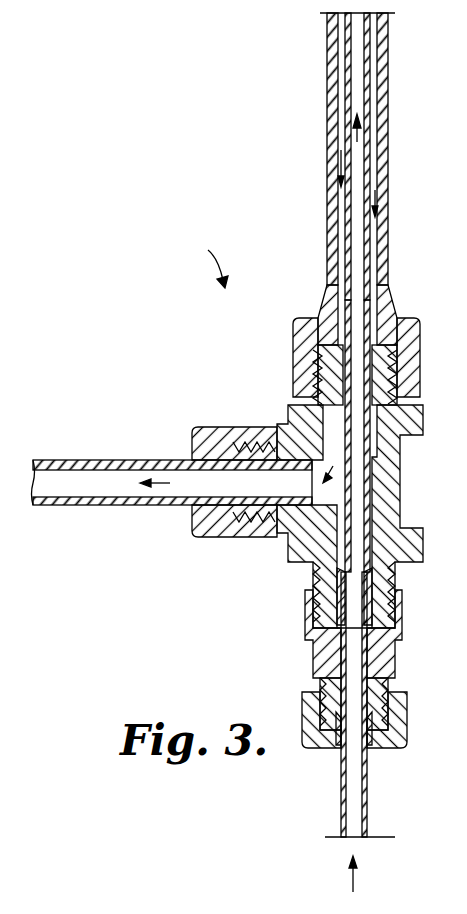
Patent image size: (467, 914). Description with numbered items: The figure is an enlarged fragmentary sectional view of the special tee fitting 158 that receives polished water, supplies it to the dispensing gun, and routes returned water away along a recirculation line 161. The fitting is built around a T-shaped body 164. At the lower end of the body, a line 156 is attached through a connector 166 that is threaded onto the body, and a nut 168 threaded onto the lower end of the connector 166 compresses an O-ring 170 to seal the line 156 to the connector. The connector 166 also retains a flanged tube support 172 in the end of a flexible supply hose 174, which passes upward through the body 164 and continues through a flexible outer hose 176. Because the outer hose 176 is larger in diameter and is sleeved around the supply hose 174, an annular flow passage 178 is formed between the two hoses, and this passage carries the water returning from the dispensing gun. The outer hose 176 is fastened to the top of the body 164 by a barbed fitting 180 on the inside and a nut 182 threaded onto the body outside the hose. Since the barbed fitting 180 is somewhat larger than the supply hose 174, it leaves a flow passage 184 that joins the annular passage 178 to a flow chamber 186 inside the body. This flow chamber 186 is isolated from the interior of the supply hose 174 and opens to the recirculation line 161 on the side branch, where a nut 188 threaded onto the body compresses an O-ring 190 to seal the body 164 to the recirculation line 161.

The line 156 is at (368, 802).
The tee fitting 158 is at (200, 265).
The recirculation line 161 is at (75, 460).
The T-shaped body 164 is at (390, 480).
The connector 166 is at (388, 660).
The nut 168 is at (407, 715).
The O-ring 170 is at (375, 748).
The flanged tube support 172 is at (370, 624).
The flexible supply hose 174 is at (368, 510).
The flexible outer hose 176 is at (388, 173).
The annular flow passage 178 is at (380, 128).
The barbed fitting 180 is at (380, 313).
The nut 182 is at (308, 325).
The flow passage 184 is at (380, 370).
The flow chamber 186 is at (337, 425).
The nut 188 is at (207, 537).
The O-ring 190 is at (233, 453).